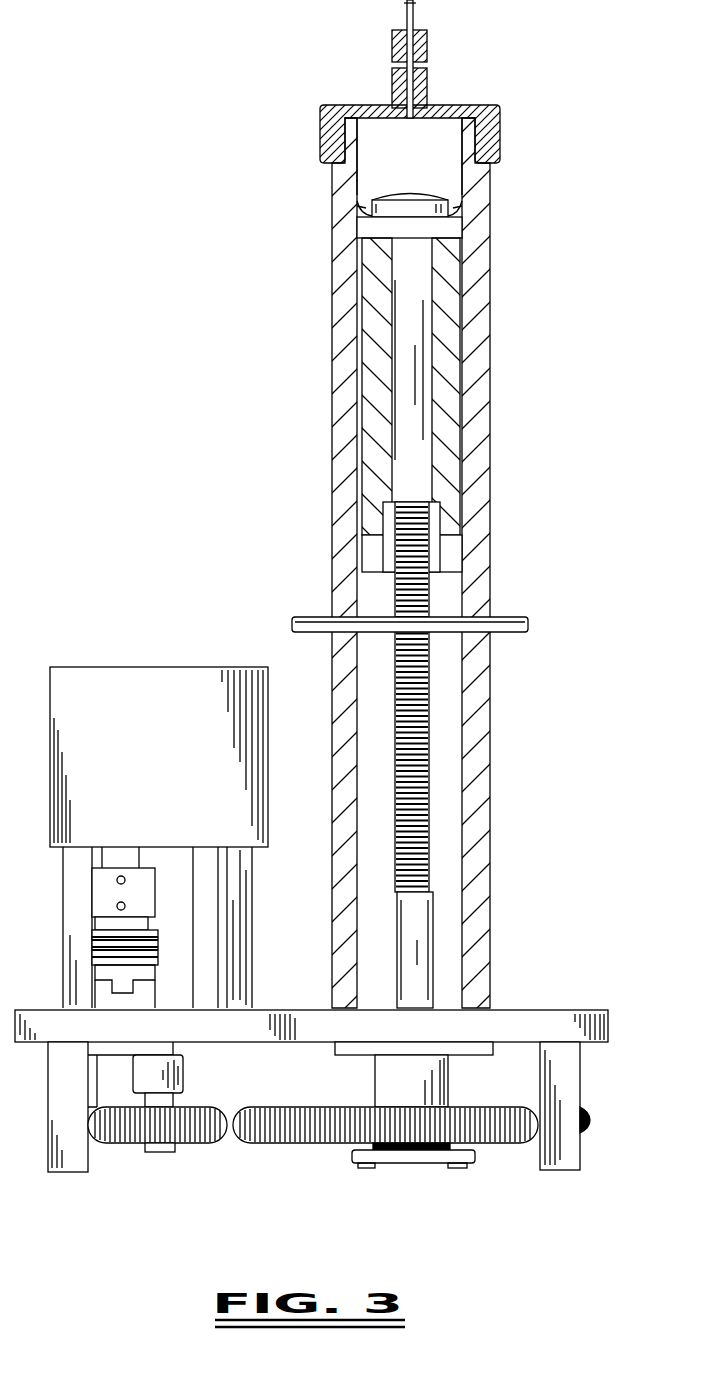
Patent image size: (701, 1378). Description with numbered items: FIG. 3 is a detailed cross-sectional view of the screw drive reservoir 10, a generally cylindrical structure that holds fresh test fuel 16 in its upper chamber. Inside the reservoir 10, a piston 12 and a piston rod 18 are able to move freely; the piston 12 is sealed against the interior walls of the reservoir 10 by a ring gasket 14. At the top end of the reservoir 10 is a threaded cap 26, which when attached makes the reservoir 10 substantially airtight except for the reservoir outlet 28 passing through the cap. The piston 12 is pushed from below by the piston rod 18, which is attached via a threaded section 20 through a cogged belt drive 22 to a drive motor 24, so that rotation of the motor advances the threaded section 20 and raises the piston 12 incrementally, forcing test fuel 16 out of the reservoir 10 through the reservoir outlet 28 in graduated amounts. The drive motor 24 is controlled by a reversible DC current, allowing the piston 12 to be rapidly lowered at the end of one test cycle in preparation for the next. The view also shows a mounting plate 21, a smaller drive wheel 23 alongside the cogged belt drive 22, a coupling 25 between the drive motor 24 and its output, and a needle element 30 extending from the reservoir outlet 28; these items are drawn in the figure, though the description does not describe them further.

The reservoir 10 is at (326, 388).
The piston 12 is at (450, 228).
The ring gasket 14 is at (450, 197).
The test fuel 16 is at (427, 166).
The piston rod 18 is at (447, 388).
The threaded section 20 is at (430, 690).
The base plate 21 is at (578, 1010).
The cogged belt drive 22 is at (300, 1143).
The small gear 23 is at (198, 1143).
The drive motor 24 is at (179, 766).
The coupling 25 is at (100, 960).
The threaded cap 26 is at (500, 128).
The reservoir outlet 28 is at (427, 90).
The needle 30 is at (413, 13).